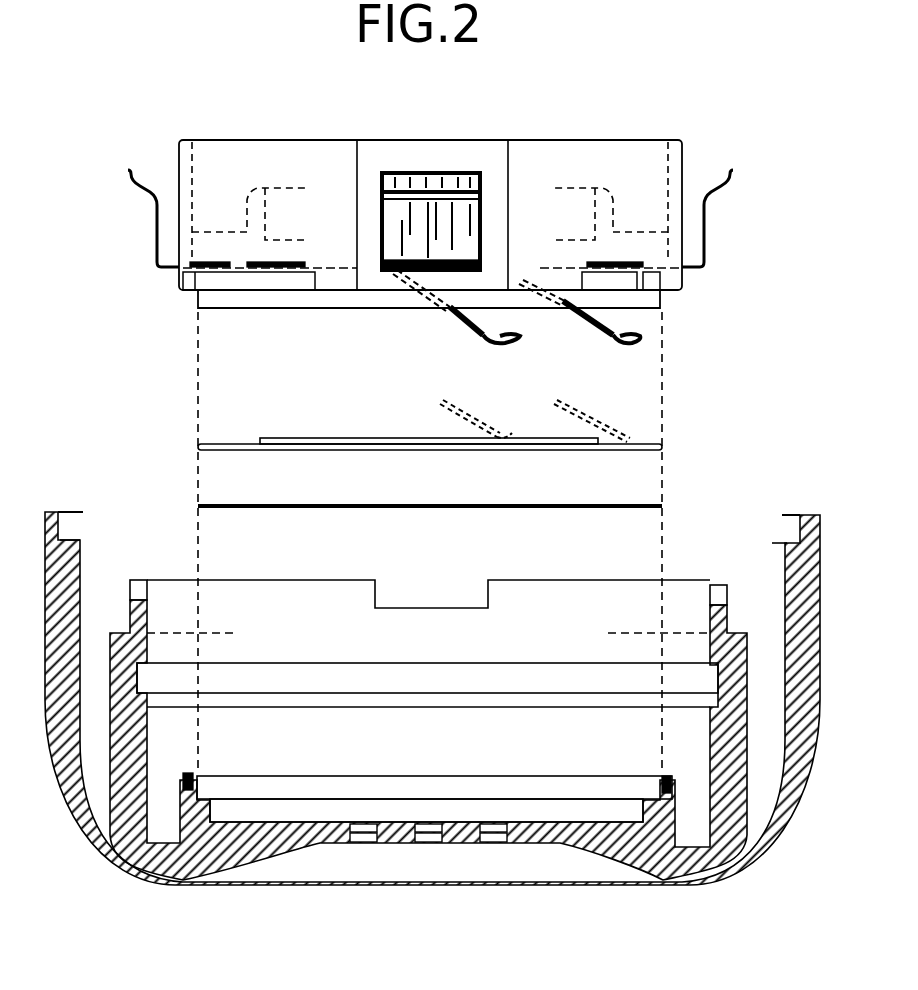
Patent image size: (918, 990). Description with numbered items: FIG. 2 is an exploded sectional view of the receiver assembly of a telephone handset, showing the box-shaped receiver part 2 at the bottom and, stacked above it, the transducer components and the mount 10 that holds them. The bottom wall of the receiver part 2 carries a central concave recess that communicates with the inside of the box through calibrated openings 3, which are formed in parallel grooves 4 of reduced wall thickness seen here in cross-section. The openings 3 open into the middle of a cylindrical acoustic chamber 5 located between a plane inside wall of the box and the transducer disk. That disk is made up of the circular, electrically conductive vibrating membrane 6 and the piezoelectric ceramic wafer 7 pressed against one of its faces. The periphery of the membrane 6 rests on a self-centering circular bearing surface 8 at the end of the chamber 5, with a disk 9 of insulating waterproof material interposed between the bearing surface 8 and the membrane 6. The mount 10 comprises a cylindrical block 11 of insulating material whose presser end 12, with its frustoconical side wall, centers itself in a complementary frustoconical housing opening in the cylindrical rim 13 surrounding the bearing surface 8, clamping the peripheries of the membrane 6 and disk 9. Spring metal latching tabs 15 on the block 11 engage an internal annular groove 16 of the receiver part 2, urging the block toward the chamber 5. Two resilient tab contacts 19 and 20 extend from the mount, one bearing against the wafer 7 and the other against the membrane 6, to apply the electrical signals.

The receiver part 2 is at (718, 785).
The calibrated openings 3 is at (493, 824).
The parallel grooves 4 is at (493, 842).
The cylindrical acoustic chamber 5 is at (578, 810).
The vibrating membrane 6 is at (235, 445).
The piezoelectric ceramic wafer 7 is at (333, 438).
The circular bearing surface 8 is at (203, 792).
The insulating waterproof disk 9 is at (236, 505).
The mount 10 is at (431, 224).
The block of insulating material 11 is at (232, 168).
The presser end 12 is at (202, 297).
The cylindrical rim 13 is at (187, 770).
The latching tabs 15 is at (156, 220).
The internal annular groove 16 is at (137, 682).
The contact 19 is at (487, 423).
The contact 20 is at (612, 423).